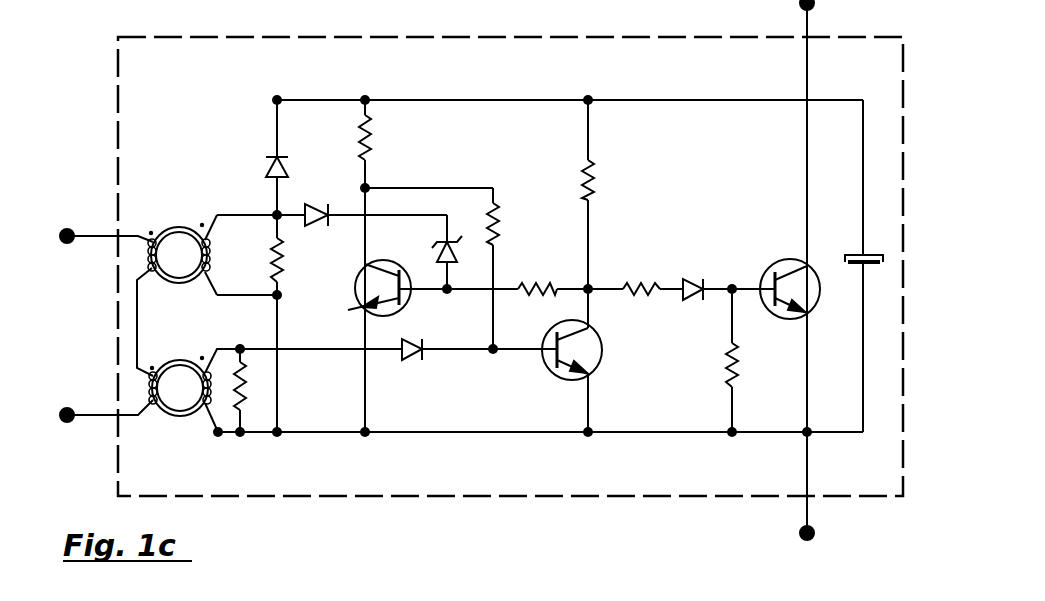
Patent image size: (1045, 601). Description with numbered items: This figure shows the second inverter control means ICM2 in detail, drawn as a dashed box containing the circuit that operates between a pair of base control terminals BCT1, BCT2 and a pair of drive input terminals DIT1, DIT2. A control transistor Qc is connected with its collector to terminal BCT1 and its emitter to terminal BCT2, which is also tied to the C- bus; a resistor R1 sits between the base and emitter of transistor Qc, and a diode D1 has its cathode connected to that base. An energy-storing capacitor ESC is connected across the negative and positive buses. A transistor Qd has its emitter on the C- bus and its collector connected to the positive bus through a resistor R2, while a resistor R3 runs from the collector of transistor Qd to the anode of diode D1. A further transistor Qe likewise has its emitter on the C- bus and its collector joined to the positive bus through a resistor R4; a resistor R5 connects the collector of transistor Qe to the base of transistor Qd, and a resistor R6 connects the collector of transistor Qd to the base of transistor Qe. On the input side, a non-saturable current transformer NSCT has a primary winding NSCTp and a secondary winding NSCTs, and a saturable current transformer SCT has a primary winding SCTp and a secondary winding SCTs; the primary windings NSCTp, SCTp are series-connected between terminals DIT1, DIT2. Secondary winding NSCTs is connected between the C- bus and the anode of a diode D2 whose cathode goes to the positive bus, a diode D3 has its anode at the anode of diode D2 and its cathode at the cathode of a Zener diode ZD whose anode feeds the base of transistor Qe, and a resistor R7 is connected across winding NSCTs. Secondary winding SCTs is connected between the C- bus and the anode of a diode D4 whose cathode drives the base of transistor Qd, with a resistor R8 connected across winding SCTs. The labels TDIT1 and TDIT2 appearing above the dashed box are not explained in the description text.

The second inverter control means ICM2 is at (395, 501).
The C− bus C- is at (447, 433).
The drive input terminal DIT1 is at (70, 230).
The drive input terminal DIT2 is at (68, 422).
The base control terminal BCT1 is at (813, 7).
The base control terminal BCT2 is at (815, 540).
The non-saturable current transformer NSCT is at (138, 264).
The primary winding NSCTp is at (150, 260).
The secondary winding NSCTs is at (212, 250).
The saturable current transformer SCT is at (146, 404).
The primary winding SCTp is at (150, 392).
The secondary winding SCTs is at (212, 382).
The diode D1 is at (684, 278).
The diode D2 is at (272, 165).
The diode D3 is at (302, 212).
The diode D4 is at (414, 362).
The Zener diode ZD is at (432, 255).
The resistor R1 is at (726, 355).
The resistor R2 is at (595, 178).
The resistor R3 is at (620, 282).
The resistor R4 is at (370, 130).
The resistor R5 is at (500, 220).
The resistor R6 is at (530, 282).
The resistor R7 is at (283, 278).
The resistor R8 is at (250, 395).
The transistor Qe is at (348, 310).
The transistor Qd is at (557, 370).
The control transistor Qc is at (780, 265).
The energy-storing capacitor ESC is at (842, 256).
The transformer detector input terminal 1 TDIT1 is at (246, 4).
The transformer detector input terminal 2 TDIT2 is at (505, 4).